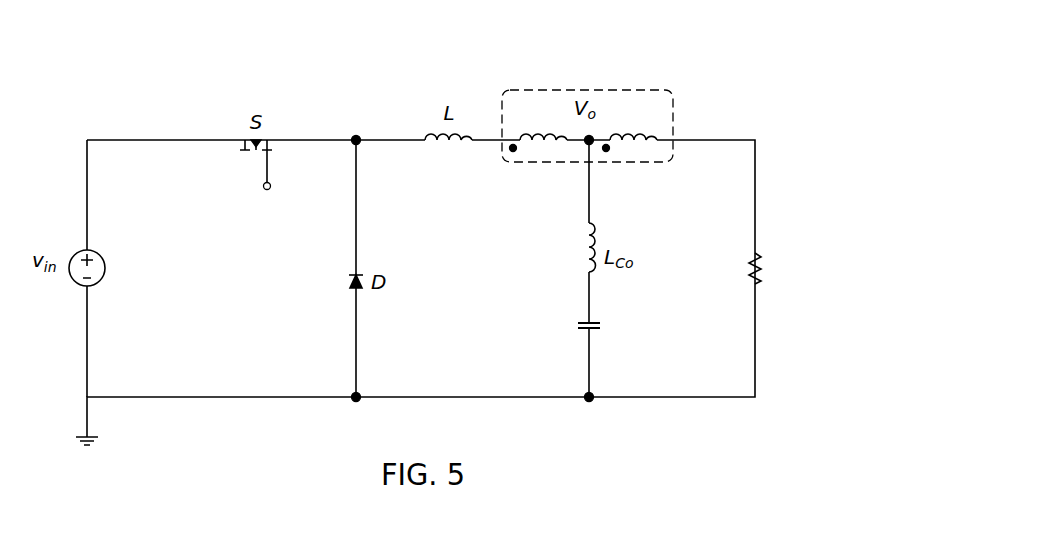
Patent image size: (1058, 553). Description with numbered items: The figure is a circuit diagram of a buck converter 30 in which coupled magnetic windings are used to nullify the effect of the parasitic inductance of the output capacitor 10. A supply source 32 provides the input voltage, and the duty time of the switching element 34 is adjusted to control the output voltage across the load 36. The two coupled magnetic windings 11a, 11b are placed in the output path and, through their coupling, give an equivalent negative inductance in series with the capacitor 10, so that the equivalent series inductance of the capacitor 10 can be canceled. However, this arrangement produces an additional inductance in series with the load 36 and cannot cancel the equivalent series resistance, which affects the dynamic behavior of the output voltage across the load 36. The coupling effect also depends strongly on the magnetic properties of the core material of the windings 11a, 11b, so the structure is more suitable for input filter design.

The buck converter 30 is at (644, 109).
The supply source 32 is at (103, 258).
The switching element S 34 is at (262, 160).
The load 36 is at (765, 258).
The capacitor 10 is at (582, 322).
The coupled magnetic winding 11a is at (541, 142).
The coupled magnetic winding 11b is at (636, 142).